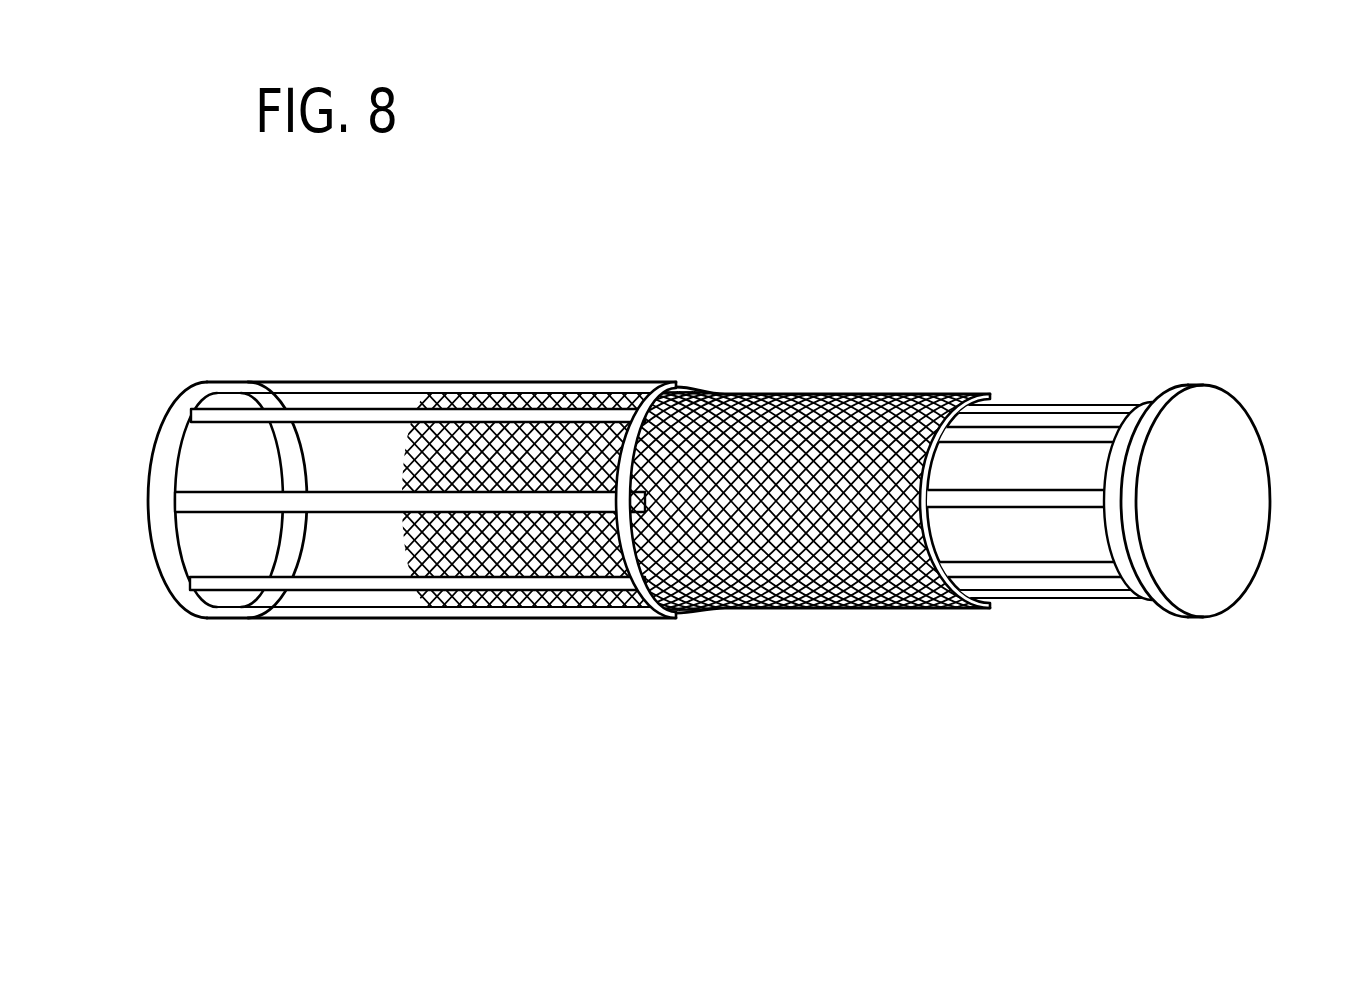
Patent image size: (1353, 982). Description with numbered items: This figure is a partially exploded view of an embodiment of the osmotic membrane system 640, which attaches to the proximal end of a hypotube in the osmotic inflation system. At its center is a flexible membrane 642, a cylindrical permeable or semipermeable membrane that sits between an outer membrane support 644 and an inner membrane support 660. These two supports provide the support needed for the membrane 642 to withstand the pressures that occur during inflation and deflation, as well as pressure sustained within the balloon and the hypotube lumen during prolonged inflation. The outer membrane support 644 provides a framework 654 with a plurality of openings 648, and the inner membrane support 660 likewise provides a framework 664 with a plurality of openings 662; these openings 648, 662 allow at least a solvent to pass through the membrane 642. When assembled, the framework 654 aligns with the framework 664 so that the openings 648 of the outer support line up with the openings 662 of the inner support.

The osmotic membrane system 640 is at (994, 172).
The flexible membrane 642 is at (791, 393).
The outer membrane support 644 is at (183, 398).
The openings 648 is at (410, 550).
The framework 654 is at (252, 498).
The inner membrane support 660 is at (1178, 715).
The openings 662 is at (1080, 440).
The framework 664 is at (1027, 407).